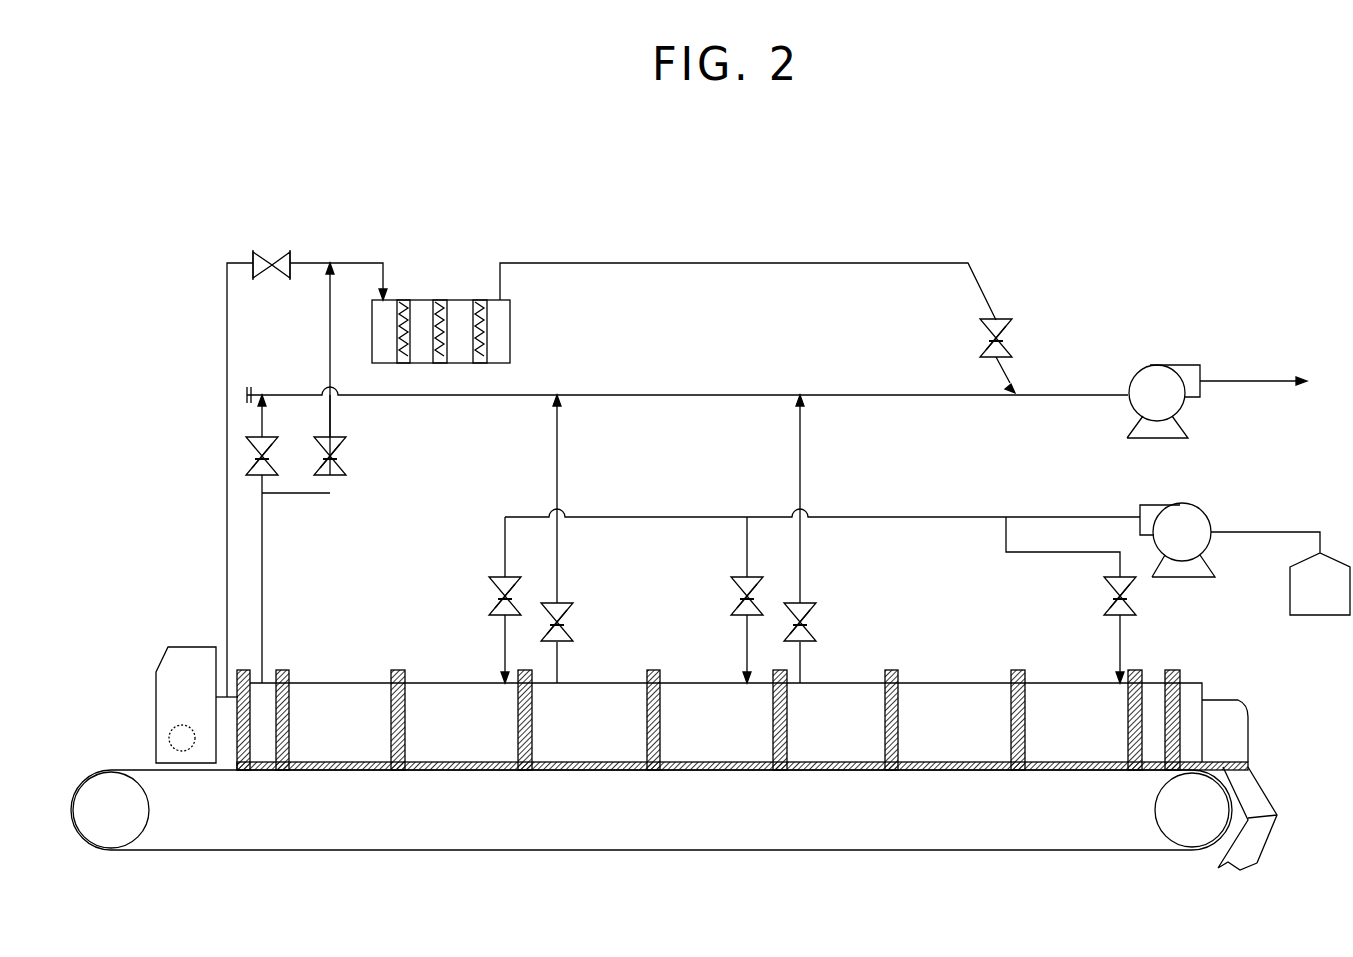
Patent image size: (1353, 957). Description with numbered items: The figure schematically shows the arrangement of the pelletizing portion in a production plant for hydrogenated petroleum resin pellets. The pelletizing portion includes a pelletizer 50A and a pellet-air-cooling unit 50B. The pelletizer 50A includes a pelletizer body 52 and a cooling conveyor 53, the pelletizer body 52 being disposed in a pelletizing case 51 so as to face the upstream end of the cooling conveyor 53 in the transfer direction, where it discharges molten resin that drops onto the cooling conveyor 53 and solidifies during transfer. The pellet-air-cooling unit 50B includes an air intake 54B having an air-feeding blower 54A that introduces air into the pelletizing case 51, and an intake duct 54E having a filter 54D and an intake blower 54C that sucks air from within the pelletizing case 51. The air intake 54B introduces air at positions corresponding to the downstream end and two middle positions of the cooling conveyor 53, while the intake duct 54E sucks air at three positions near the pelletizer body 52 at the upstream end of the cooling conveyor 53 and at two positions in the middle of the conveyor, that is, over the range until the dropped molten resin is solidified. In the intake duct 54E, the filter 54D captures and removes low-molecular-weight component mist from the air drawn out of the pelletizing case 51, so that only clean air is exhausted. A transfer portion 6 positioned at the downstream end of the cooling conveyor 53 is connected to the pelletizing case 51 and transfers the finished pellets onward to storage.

The pelletizer 50A is at (103, 655).
The pellet-air-cooling unit 50B is at (1095, 277).
The pelletizing case 51 is at (952, 692).
The pelletizer body 52 is at (175, 728).
The cooling conveyor 53 is at (103, 771).
The air-feeding blower 54A is at (1198, 506).
The air intake 54B is at (1083, 516).
The intake blower 54C is at (1157, 365).
The filter 54D is at (428, 298).
The intake duct 54E is at (1097, 393).
The transfer portion 6 is at (1270, 792).